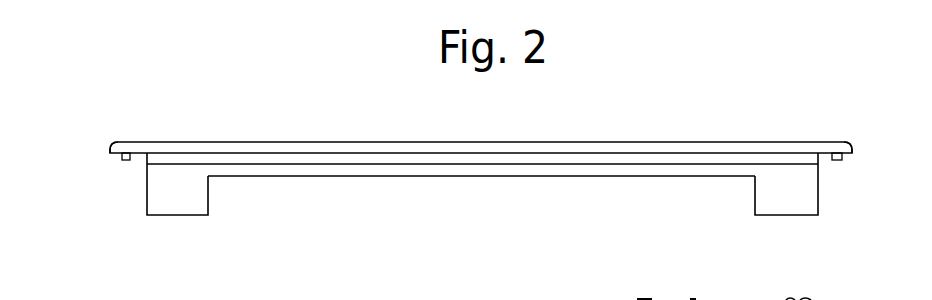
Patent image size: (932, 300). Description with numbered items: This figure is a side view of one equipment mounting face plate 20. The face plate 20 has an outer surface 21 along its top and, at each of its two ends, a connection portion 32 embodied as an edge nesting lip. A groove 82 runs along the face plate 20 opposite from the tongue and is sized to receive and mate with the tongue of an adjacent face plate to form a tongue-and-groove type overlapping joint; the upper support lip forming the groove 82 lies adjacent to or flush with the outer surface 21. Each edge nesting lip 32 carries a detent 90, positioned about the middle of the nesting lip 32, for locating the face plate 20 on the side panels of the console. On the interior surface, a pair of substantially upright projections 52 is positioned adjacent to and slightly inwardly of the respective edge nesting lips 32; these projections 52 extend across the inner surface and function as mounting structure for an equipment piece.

The face plate 20 is at (420, 178).
The outer surface 21 is at (329, 143).
The connection portion 32 is at (115, 154).
The upright projection 52 is at (146, 198).
The groove 82 is at (290, 162).
The detent 90 is at (126, 162).